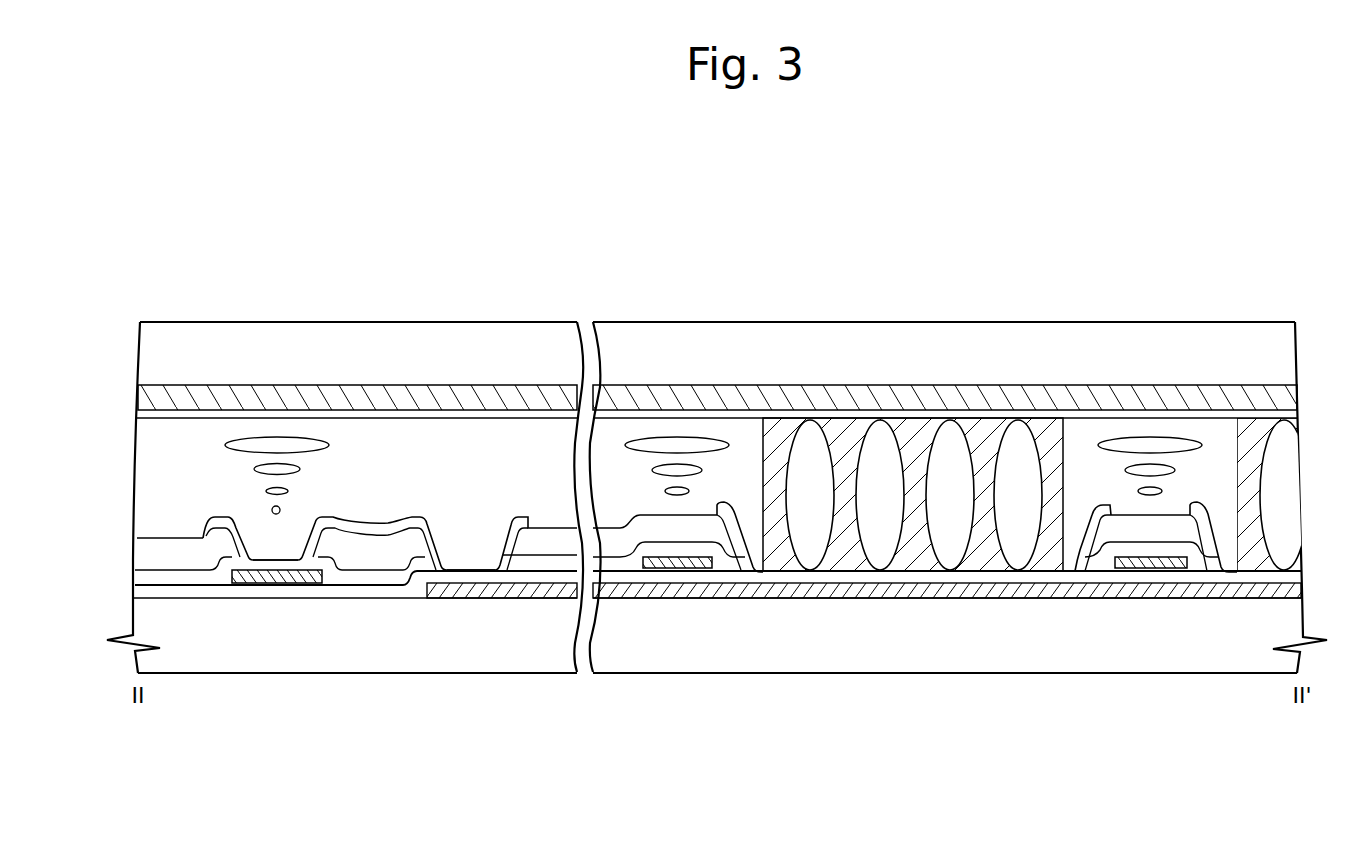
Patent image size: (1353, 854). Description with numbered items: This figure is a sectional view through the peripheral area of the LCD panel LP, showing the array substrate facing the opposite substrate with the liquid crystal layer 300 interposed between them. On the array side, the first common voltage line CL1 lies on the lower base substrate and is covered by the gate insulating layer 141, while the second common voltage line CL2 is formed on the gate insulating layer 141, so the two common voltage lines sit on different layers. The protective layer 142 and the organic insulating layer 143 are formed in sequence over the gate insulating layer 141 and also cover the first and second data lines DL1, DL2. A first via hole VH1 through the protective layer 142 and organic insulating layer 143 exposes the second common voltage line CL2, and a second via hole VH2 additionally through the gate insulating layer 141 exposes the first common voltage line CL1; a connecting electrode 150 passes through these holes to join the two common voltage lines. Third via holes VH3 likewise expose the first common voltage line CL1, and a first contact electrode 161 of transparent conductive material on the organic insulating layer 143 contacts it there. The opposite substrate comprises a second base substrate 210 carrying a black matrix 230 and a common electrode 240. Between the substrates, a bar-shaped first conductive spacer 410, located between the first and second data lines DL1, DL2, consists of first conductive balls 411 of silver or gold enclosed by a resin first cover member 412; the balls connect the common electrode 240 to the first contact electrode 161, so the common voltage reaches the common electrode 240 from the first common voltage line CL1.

The second base substrate 210 is at (1202, 338).
The black matrix 230 is at (830, 397).
The common electrode 240 is at (716, 416).
The liquid crystal layer 300 is at (158, 470).
The first conductive spacer 410 is at (1035, 394).
The first conductive ball 411 is at (1017, 444).
The first cover member 412 is at (982, 437).
The organic insulating layer 143 is at (615, 542).
The connecting electrode 150 is at (383, 532).
The protective layer 142 is at (1198, 565).
The gate insulating layer 141 is at (334, 590).
The first contact electrode 161 is at (988, 578).
The first common voltage line CL1 is at (461, 590).
The second common voltage line CL2 is at (268, 578).
The first data line DL1 is at (673, 563).
The second data line DL2 is at (1135, 563).
The first via hole VH1 is at (293, 540).
The second via hole VH2 is at (490, 541).
The third via hole VH3 is at (1076, 538).
The LCD panel LP is at (1327, 200).